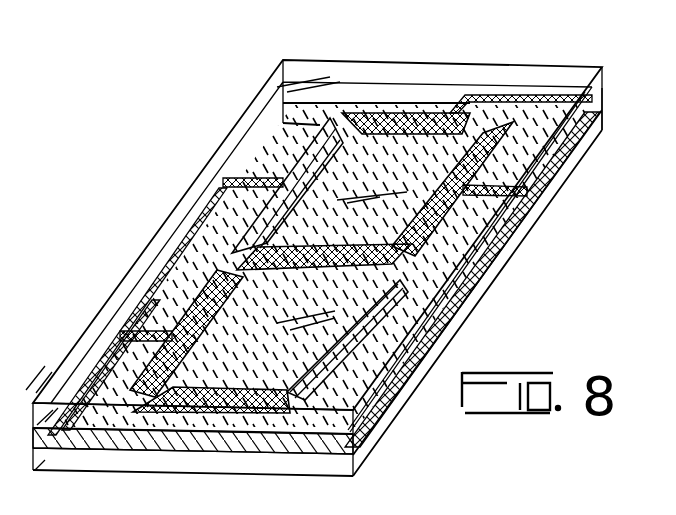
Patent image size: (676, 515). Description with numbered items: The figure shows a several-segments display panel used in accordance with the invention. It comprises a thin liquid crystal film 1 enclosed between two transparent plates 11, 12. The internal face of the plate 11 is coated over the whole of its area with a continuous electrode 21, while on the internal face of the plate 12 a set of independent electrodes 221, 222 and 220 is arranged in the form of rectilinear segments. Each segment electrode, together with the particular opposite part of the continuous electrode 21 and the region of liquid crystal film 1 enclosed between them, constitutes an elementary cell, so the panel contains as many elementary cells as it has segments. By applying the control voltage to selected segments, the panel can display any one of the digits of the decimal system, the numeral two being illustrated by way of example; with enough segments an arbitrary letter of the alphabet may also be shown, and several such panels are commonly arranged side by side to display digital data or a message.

The thin liquid crystal film 1 is at (607, 97).
The transparent plate 11 is at (608, 128).
The transparent plate 12 is at (607, 67).
The continuous electrode 21 is at (523, 210).
The independent electrode 220 is at (205, 297).
The independent electrode 221 is at (300, 160).
The independent electrode 222 is at (395, 113).